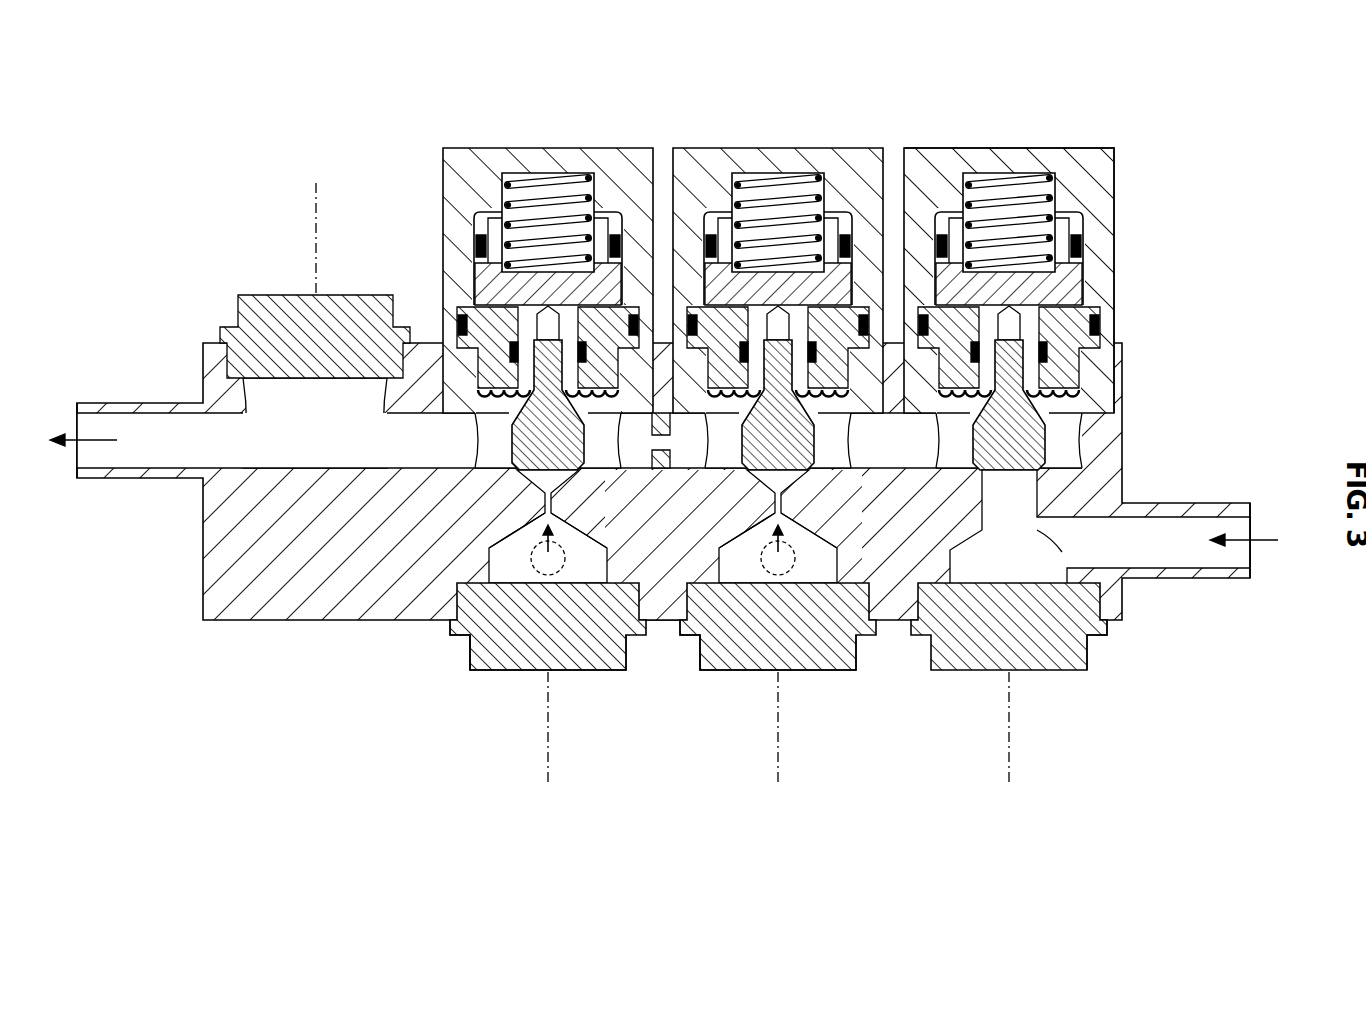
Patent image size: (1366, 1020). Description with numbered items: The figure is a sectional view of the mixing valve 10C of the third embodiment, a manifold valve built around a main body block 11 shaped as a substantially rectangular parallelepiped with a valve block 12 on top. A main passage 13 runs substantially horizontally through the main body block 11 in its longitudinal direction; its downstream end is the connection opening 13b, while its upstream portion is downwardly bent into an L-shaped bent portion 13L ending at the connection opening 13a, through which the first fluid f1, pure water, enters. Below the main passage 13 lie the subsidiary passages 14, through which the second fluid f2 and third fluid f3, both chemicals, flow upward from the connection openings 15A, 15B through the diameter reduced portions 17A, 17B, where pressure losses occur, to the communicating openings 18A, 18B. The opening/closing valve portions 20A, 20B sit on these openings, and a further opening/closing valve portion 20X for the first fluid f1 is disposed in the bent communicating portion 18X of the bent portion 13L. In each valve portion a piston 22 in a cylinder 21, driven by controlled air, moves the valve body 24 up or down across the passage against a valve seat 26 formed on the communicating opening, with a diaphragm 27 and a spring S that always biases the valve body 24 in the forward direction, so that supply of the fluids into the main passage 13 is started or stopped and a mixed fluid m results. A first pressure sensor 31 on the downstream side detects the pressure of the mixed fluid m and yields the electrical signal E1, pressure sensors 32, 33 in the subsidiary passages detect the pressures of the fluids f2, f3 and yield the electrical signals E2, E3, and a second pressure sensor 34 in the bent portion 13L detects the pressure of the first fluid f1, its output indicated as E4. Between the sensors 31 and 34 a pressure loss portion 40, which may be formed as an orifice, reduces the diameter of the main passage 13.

The mixing valve 10C is at (1127, 181).
The main body block 11 is at (210, 574).
The valve block 12 is at (464, 160).
The main passage 13 is at (155, 435).
The connection opening 13a is at (1255, 560).
The connection opening 13b is at (80, 463).
The bent portion 13L is at (1060, 600).
The subsidiary passage 14 is at (500, 540).
The connection opening 15A is at (805, 555).
The connection opening 15B is at (575, 555).
The diameter reduced portion 17A is at (745, 575).
The diameter reduced portion 17B is at (506, 575).
The communicating opening 18A is at (733, 515).
The communicating opening 18B is at (495, 515).
The bent communicating portion 18X is at (1000, 490).
The opening/closing valve portion 20A is at (810, 437).
The opening/closing valve portion 20B is at (516, 434).
The opening/closing valve portion 20X is at (1040, 425).
The cylinder 21 is at (478, 289).
The piston 22 is at (613, 240).
The valve body 24 is at (585, 446).
The valve seat 26 is at (478, 482).
The diaphragm 27 is at (505, 388).
The pressure sensor 31 is at (252, 300).
The pressure sensor 32 is at (700, 672).
The pressure sensor 33 is at (472, 672).
The pressure sensor 34 is at (1085, 645).
The pressure loss portion 40 is at (655, 450).
The spring S is at (550, 182).
The mixed fluid m is at (100, 439).
The first fluid f1 is at (1270, 535).
The second fluid f2 is at (795, 570).
The third fluid f3 is at (562, 570).
The electrical signal E1 is at (316, 192).
The electrical signal E2 is at (778, 770).
The electrical signal E3 is at (548, 775).
The axis E4 is at (1009, 775).